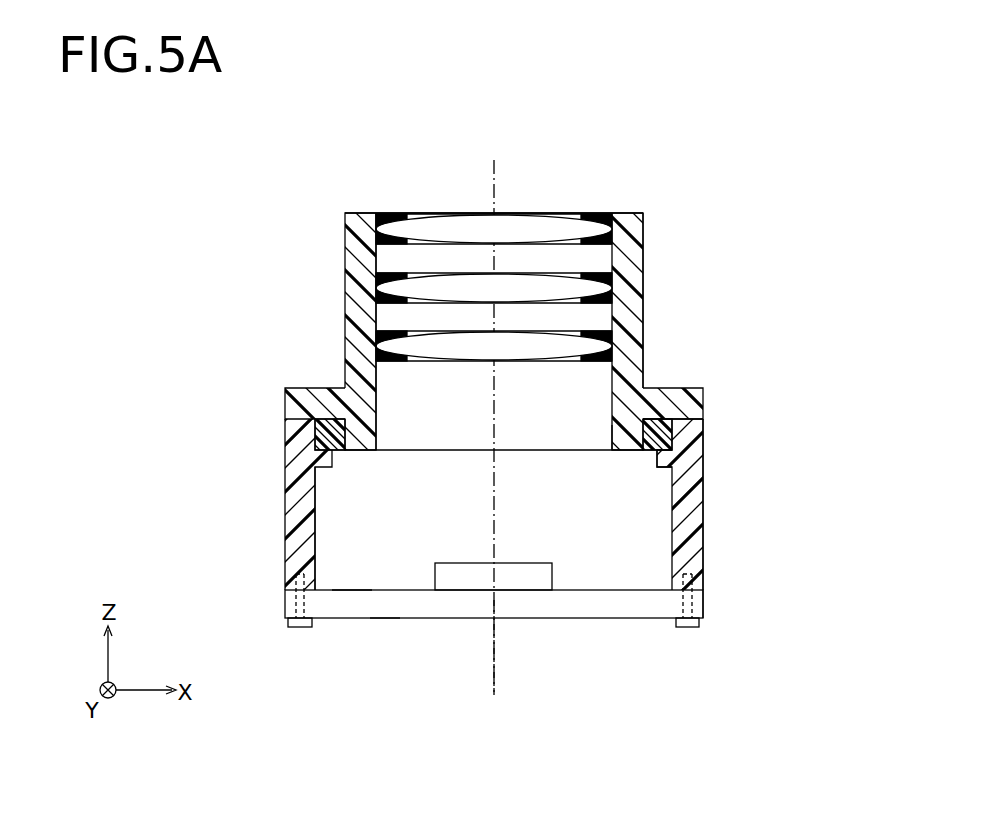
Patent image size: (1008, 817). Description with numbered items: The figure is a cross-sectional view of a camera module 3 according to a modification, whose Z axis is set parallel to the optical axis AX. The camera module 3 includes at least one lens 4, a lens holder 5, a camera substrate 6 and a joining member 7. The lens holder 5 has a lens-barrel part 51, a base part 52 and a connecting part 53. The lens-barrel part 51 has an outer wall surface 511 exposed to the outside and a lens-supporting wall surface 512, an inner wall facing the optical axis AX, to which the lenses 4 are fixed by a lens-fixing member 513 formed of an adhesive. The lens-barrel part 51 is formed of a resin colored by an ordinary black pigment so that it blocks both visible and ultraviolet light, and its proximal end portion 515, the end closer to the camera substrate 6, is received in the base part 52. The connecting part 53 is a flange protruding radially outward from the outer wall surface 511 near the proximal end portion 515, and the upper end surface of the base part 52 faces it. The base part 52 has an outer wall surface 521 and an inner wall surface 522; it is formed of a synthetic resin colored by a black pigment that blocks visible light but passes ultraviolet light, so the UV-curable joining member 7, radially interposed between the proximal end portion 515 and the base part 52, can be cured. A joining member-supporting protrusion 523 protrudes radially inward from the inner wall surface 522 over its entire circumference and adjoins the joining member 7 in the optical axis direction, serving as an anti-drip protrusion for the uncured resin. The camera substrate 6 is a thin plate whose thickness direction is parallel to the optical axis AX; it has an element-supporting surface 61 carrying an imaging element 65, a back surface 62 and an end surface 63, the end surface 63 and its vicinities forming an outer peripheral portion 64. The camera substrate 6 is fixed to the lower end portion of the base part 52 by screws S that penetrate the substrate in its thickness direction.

The camera module 3 is at (247, 160).
The lens 4 is at (533, 213).
The lens holder 5 is at (714, 422).
The camera substrate 6 is at (532, 619).
The joining member 7 is at (337, 440).
The lens-barrel part 51 is at (635, 302).
The base part 52 is at (688, 482).
The connecting part 53 is at (298, 404).
The element-supporting surface 61 is at (352, 590).
The back surface 62 is at (387, 619).
The end surface 63 is at (703, 606).
The outer peripheral portion 64 is at (656, 619).
The imaging element 65 is at (535, 572).
The outer wall surface 511 is at (643, 262).
The lens-supporting wall surface 512 is at (385, 385).
The lens-fixing member 513 is at (386, 213).
The proximal end portion 515 is at (610, 428).
The outer wall surface 521 is at (706, 523).
The inner wall surface 522 is at (322, 532).
The joining member-supporting protrusion 523 is at (660, 460).
The screw S is at (288, 622).
The optical axis AX is at (492, 690).